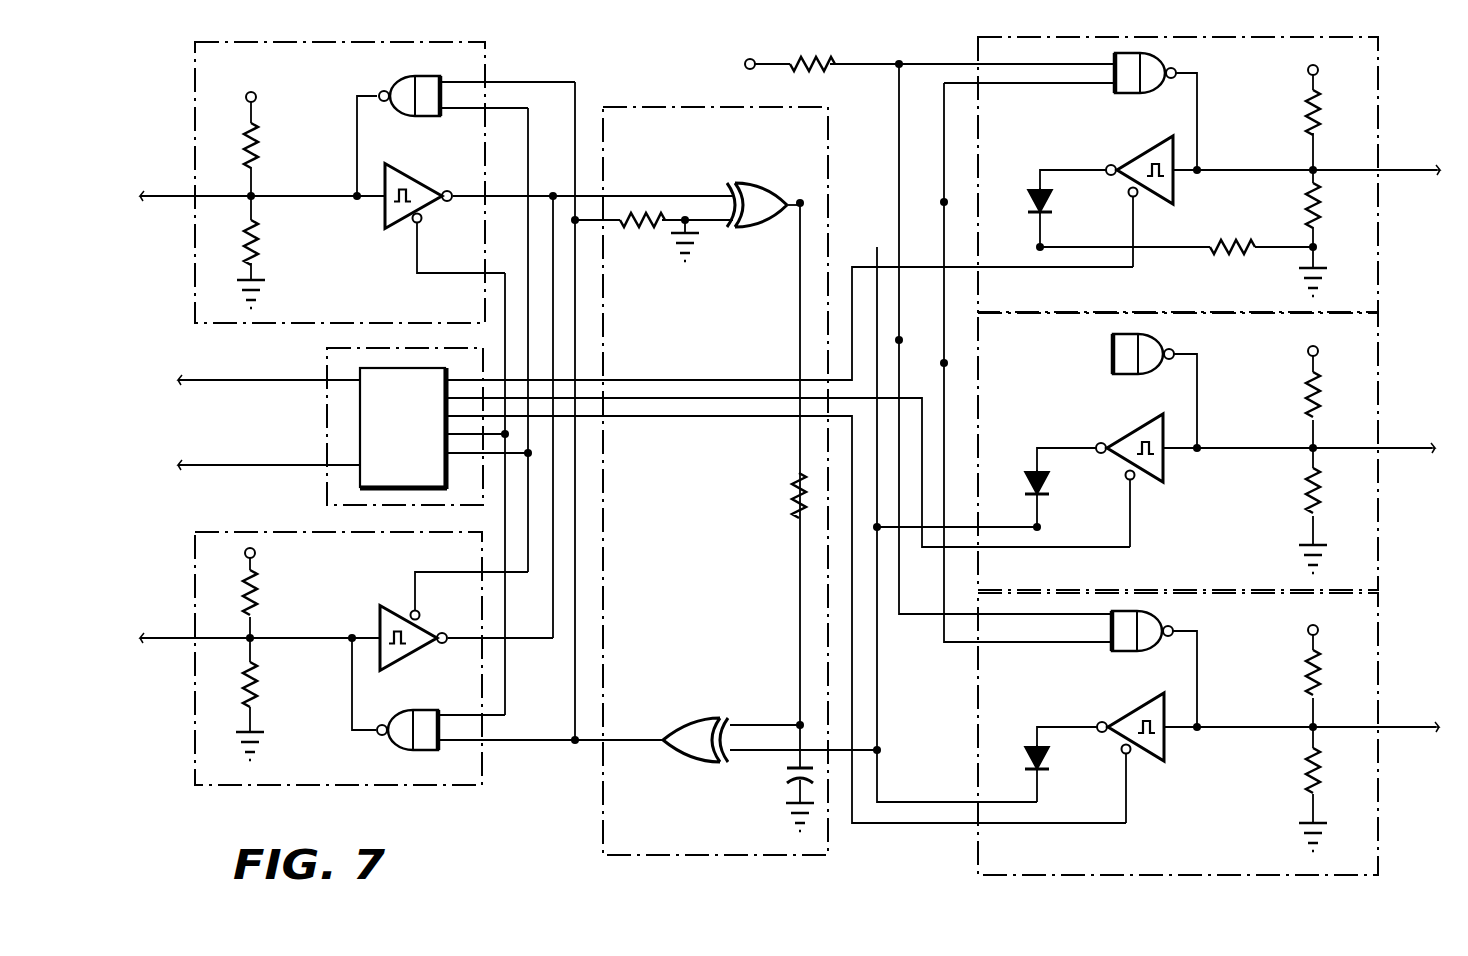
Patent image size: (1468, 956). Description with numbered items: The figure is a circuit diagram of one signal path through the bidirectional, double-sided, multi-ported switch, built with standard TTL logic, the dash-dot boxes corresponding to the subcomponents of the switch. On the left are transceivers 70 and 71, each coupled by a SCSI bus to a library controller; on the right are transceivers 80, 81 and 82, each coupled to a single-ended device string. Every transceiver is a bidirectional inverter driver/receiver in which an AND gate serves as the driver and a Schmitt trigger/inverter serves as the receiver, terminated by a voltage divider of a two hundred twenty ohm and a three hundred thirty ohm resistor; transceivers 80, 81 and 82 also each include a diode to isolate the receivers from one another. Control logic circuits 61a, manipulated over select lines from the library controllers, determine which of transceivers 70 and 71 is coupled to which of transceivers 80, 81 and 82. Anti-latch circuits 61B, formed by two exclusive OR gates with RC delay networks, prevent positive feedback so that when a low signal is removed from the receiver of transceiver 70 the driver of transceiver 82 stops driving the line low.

The transceiver 70 is at (486, 68).
The transceiver 71 is at (482, 775).
The control logic circuits 61a is at (326, 368).
The anti-latch circuits 61B is at (696, 107).
The transceiver 80 is at (1393, 80).
The transceiver 81 is at (1393, 348).
The transceiver 82 is at (1378, 640).